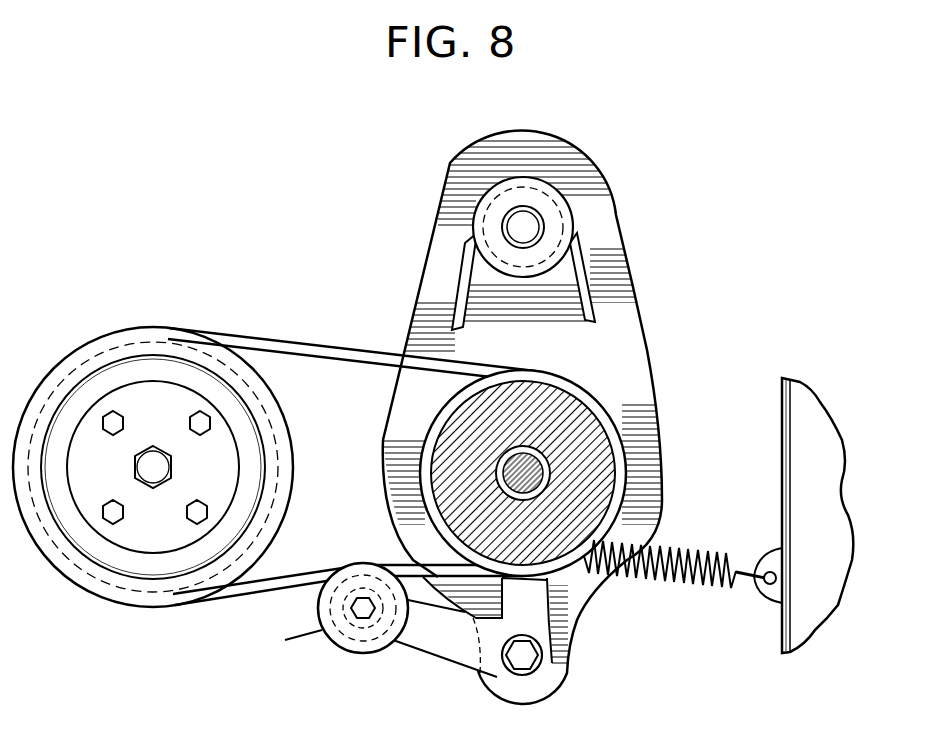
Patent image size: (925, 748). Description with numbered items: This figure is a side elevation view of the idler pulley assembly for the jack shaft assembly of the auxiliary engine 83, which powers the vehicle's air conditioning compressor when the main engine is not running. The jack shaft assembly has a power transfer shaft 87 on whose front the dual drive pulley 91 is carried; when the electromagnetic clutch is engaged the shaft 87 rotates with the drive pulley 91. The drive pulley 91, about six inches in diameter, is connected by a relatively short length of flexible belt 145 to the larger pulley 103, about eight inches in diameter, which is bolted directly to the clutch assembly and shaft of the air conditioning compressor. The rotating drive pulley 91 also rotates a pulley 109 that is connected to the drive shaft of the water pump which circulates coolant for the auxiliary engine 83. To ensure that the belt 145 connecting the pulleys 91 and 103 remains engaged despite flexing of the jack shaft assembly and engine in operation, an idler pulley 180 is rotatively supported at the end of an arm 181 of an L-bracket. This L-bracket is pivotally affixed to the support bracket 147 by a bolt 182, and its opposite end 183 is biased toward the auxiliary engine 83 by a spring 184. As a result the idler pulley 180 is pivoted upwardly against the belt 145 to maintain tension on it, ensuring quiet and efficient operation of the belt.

The auxiliary internal combustion engine 83 is at (813, 413).
The power transfer shaft 87 is at (500, 458).
The dual drive pulley 91 is at (560, 410).
The pulley 103 is at (108, 372).
The pulley 109 is at (567, 203).
The flexible belt 145 is at (275, 343).
The support bracket 147 is at (447, 197).
The idler pulley 180 is at (327, 627).
The arm 181 is at (437, 640).
The bolt 182 is at (545, 667).
The opposite end of L-bracket 183 is at (573, 612).
The spring 184 is at (693, 552).